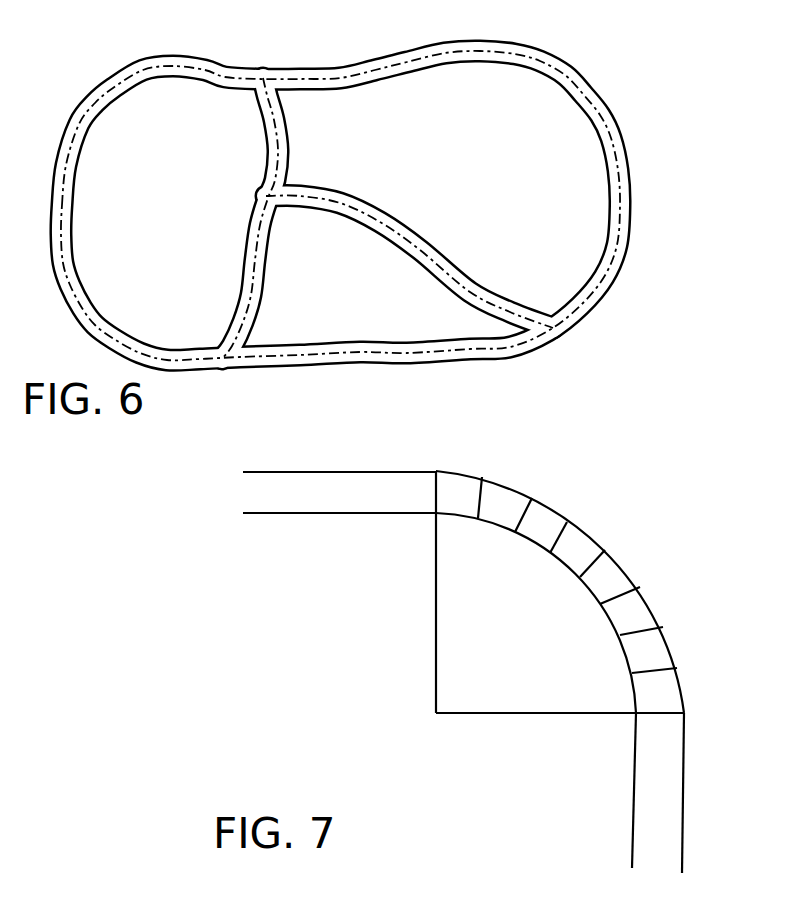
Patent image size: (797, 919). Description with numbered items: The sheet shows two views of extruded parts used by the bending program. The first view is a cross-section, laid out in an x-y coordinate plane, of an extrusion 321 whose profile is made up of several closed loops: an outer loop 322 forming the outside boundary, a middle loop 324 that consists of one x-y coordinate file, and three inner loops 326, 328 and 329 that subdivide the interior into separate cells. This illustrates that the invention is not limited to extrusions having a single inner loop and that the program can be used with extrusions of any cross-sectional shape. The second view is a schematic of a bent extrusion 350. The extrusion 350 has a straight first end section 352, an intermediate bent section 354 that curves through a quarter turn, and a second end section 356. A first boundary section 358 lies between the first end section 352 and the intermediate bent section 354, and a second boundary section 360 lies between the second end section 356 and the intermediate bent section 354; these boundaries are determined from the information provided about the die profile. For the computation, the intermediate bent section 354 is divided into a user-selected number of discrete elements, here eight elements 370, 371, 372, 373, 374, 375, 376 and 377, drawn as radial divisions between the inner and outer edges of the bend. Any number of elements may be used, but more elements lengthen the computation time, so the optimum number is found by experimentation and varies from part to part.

In FIG. 6, the extrusion 321 is at (622, 120).
In FIG. 6, the outer loop 322 is at (631, 185).
In FIG. 6, the middle loop 324 is at (543, 70).
In FIG. 6, the inner loop 326 is at (113, 98).
In FIG. 6, the inner loop 328 is at (493, 63).
In FIG. 6, the inner loop 329 is at (383, 240).
In FIG. 7, the extrusion 350 is at (677, 463).
In FIG. 7, the first end section 352 is at (353, 516).
In FIG. 7, the intermediate bent section 354 is at (438, 722).
In FIG. 7, the second end section 356 is at (667, 846).
In FIG. 7, the first boundary section 358 is at (433, 495).
In FIG. 7, the second boundary section 360 is at (654, 717).
In FIG. 7, the element 370 is at (462, 485).
In FIG. 7, the element 371 is at (505, 497).
In FIG. 7, the element 372 is at (542, 517).
In FIG. 7, the element 373 is at (585, 540).
In FIG. 7, the element 374 is at (615, 565).
In FIG. 7, the element 375 is at (643, 610).
In FIG. 7, the element 376 is at (663, 650).
In FIG. 7, the element 377 is at (667, 690).